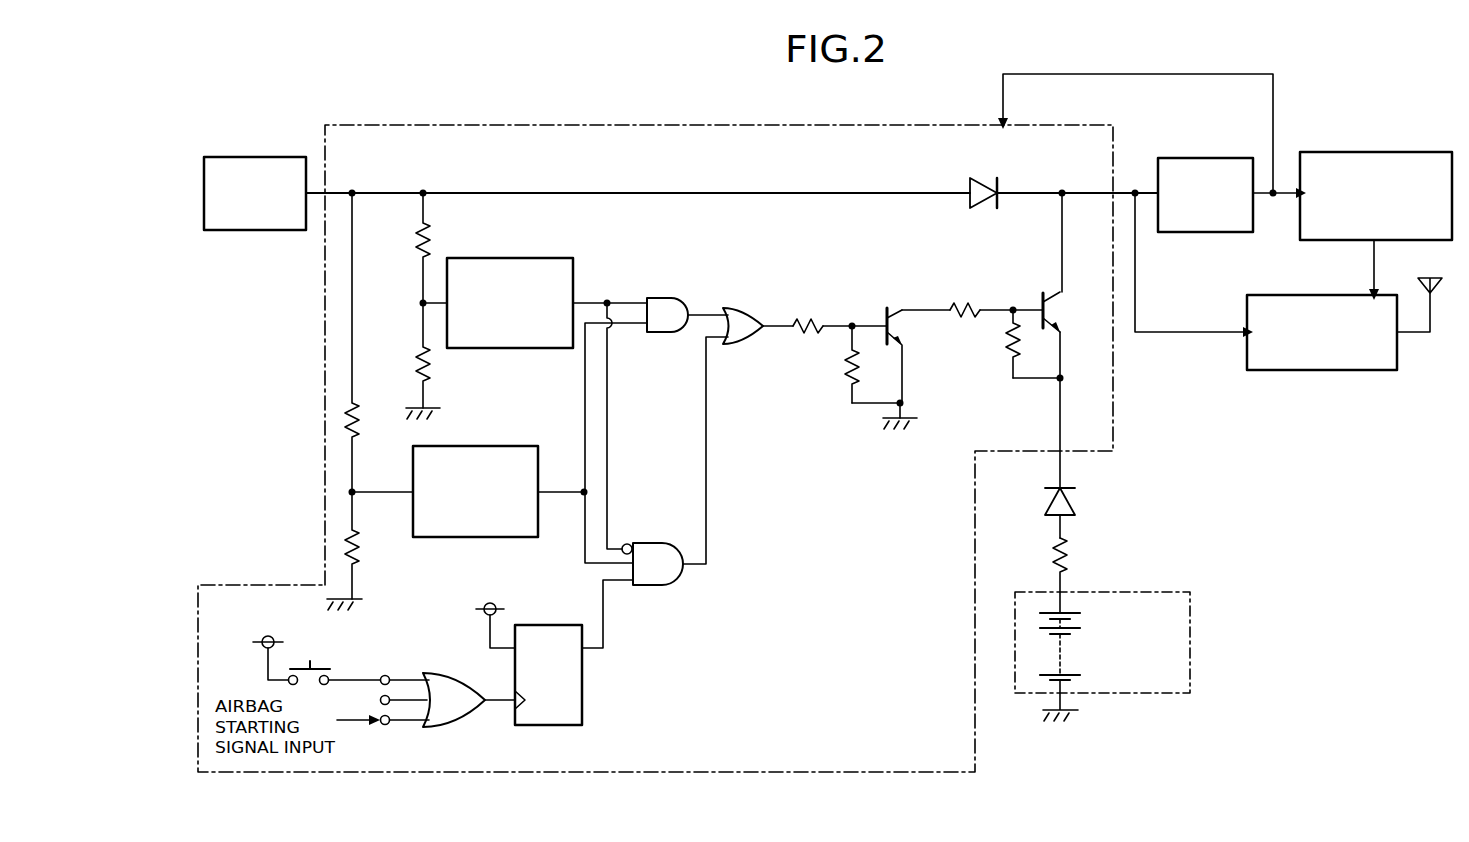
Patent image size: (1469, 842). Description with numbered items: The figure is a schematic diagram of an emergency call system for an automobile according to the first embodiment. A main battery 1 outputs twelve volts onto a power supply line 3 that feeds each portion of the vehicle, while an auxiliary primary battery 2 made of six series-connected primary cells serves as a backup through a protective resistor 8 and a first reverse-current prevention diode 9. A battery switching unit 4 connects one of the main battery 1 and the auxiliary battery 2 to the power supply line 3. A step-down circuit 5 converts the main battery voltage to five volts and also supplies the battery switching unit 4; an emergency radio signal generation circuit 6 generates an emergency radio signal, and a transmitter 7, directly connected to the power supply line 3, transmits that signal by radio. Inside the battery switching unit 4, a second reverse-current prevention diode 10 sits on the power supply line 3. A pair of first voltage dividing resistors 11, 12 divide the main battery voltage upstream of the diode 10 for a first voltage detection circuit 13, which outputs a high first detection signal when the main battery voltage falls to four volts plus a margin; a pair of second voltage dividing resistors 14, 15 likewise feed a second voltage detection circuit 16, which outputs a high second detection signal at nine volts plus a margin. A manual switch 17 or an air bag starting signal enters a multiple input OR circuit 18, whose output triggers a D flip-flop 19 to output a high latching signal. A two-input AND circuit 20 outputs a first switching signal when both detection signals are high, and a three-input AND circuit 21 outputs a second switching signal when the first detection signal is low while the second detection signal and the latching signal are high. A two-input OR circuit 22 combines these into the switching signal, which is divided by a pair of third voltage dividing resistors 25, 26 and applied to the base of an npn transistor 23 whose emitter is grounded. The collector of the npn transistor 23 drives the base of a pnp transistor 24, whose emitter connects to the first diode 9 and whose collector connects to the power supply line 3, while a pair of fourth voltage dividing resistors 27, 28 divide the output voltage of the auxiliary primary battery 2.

The main battery 1 is at (255, 157).
The auxiliary primary battery 2 is at (1193, 647).
The power supply line 3 is at (1092, 193).
The battery switching unit 4 is at (730, 125).
The step-down circuit 5 is at (1205, 158).
The emergency radio signal generation circuit 6 is at (1377, 152).
The transmitter 7 is at (1320, 371).
The protective resistor 8 is at (1077, 554).
The first reverse-current prevention diode 9 is at (1077, 499).
The second reverse-current prevention diode 10 is at (984, 177).
The first voltage dividing resistor 11 is at (410, 244).
The first voltage dividing resistor 12 is at (410, 365).
The first voltage detection circuit 13 is at (507, 257).
The second voltage dividing resistor 14 is at (360, 437).
The second voltage dividing resistor 15 is at (360, 562).
The second voltage detection circuit 16 is at (487, 446).
The manual switch 17 is at (309, 652).
The multiple input OR circuit 18 is at (447, 673).
The D flip-flop 19 is at (548, 625).
The 2-input AND circuit 20 is at (665, 297).
The 3-input AND circuit 21 is at (657, 543).
The 2-input OR circuit 22 is at (741, 307).
The npn transistor 23 is at (905, 335).
The pnp transistor 24 is at (1063, 318).
The third voltage dividing resistor 25 is at (810, 307).
The third voltage dividing resistor 26 is at (836, 367).
The fourth voltage dividing resistor 27 is at (967, 298).
The fourth voltage dividing resistor 28 is at (999, 352).